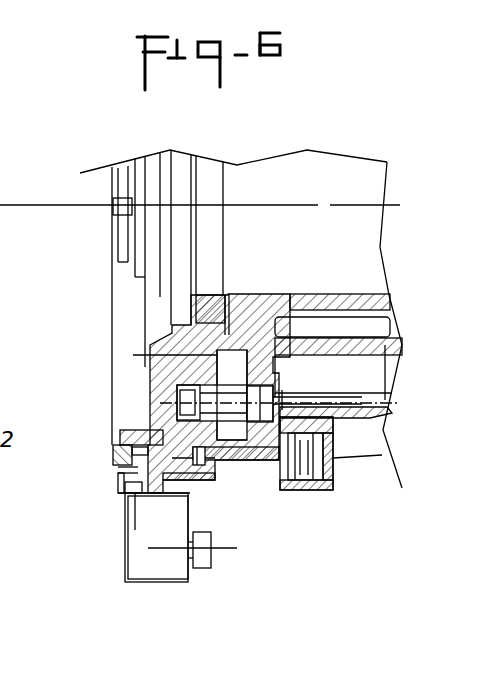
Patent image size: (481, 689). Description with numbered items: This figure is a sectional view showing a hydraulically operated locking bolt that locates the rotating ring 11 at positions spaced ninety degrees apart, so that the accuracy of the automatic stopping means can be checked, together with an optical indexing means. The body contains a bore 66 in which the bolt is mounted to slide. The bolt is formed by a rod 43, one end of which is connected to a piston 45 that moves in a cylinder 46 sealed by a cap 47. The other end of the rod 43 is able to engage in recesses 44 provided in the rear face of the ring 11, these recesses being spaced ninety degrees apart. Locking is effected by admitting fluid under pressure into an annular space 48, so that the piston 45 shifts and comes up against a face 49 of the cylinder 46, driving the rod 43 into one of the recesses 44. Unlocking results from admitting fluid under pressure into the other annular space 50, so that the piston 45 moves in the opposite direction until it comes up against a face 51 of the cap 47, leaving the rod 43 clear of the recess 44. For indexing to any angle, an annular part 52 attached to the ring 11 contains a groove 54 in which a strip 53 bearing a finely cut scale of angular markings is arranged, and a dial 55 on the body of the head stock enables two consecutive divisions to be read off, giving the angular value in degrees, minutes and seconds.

The ring 11 is at (157, 417).
The rod 43 is at (254, 440).
The recesses 44 is at (192, 529).
The piston 45 is at (303, 472).
The cylinder 46 is at (320, 487).
The cap 47 is at (338, 468).
The annular space 48 is at (313, 444).
The face of the cylinder 49 is at (289, 440).
The annular space 50 is at (336, 426).
The face of the cap 51 is at (347, 492).
The annular part 52 is at (132, 452).
The strip 53 is at (130, 468).
The groove 54 is at (120, 476).
The dial 55 is at (138, 543).
The bore 66 is at (272, 470).